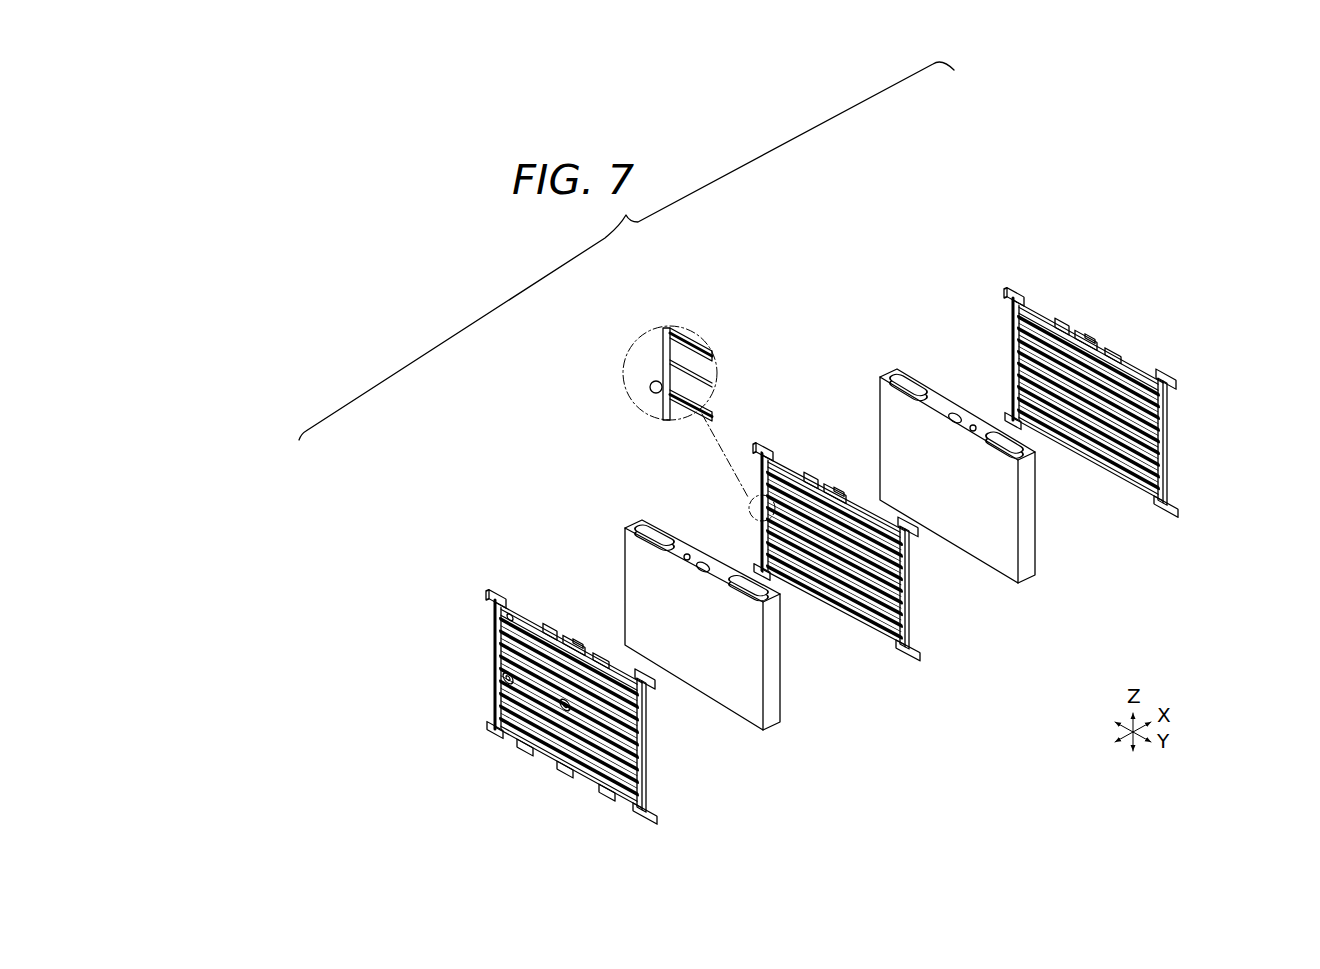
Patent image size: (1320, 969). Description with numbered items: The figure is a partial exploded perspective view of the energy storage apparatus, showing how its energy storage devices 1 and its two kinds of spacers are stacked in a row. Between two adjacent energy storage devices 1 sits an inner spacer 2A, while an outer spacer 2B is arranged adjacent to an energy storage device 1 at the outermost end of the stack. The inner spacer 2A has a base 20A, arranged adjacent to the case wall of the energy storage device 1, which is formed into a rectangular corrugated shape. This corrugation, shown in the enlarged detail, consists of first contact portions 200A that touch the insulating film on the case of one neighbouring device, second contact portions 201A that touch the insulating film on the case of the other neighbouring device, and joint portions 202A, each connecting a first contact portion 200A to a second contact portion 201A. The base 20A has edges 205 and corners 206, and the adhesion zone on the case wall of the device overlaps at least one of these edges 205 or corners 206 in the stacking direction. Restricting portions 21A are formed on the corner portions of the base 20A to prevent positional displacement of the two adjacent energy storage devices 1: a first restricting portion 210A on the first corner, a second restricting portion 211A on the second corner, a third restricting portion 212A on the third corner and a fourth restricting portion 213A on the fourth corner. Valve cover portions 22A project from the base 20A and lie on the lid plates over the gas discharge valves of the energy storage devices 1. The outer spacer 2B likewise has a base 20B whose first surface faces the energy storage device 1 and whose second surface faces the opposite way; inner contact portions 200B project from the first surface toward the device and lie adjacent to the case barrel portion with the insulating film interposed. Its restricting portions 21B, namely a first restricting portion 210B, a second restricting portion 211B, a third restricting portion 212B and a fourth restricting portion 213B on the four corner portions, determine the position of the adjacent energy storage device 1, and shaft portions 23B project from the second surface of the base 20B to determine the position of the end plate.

The energy storage device 1 is at (625, 522).
The inner spacer 2A is at (843, 527).
The outer spacer 2B is at (806, 537).
The base 20A is at (851, 395).
The first contact portion 200A is at (662, 368).
The second contact portion 201A is at (662, 402).
The joint portion 202A is at (650, 387).
The edge 205 is at (671, 345).
The corner 206 is at (703, 375).
The restricting portion 21A is at (904, 587).
The first restricting portion 210A is at (760, 437).
The second restricting portion 211A is at (914, 541).
The third restricting portion 212A is at (748, 557).
The fourth restricting portion 213A is at (912, 654).
The valve cover portion 22A is at (836, 476).
The base 20B is at (491, 681).
The inner contact portion 200B is at (1012, 332).
The restricting portion 21B is at (902, 595).
The first restricting portion 210B is at (506, 591).
The second restricting portion 211B is at (654, 692).
The third restricting portion 212B is at (999, 412).
The fourth restricting portion 213B is at (666, 792).
The shaft portion 23B is at (500, 690).